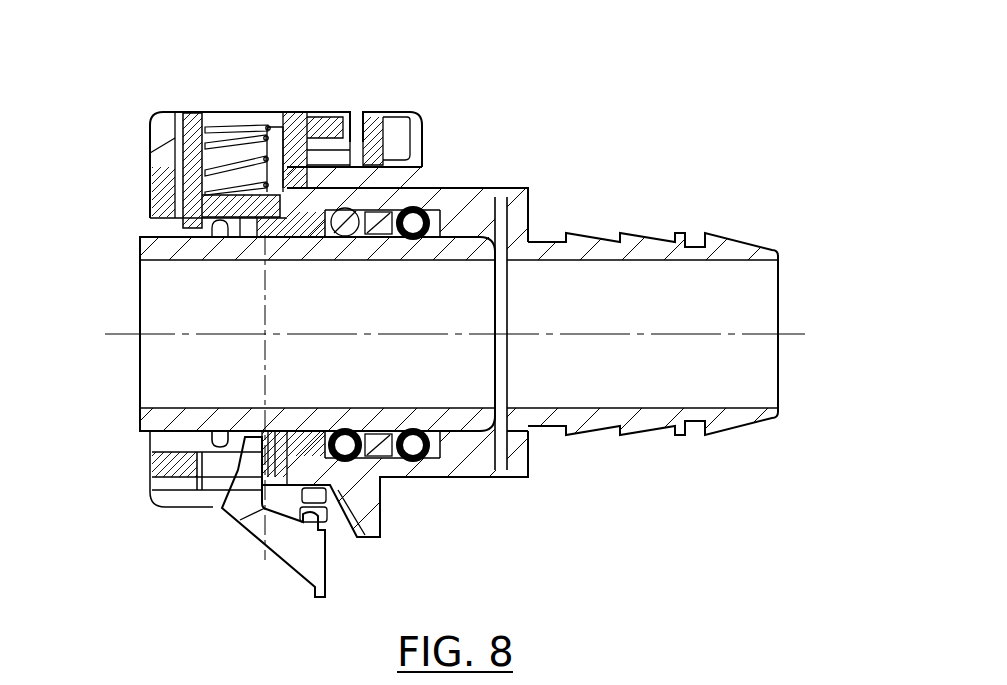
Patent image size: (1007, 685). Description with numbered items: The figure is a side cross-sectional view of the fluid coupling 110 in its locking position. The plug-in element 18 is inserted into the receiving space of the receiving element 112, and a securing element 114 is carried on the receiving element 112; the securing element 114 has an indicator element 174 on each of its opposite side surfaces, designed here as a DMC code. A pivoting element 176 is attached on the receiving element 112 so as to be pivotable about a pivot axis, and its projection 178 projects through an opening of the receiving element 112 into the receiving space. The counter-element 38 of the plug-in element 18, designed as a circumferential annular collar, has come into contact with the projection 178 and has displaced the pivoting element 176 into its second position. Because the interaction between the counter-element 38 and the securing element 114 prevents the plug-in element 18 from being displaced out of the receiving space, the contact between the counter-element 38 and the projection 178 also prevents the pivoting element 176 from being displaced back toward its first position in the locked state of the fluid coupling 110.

The fluid coupling 110 is at (112, 92).
The plug-in element 18 is at (145, 248).
The receiving element 112 is at (150, 188).
The securing element 114 is at (188, 120).
The counter-element 38 is at (225, 440).
The indicator element 174 is at (330, 563).
The pivoting element 176 is at (295, 550).
The projection 178 is at (240, 470).